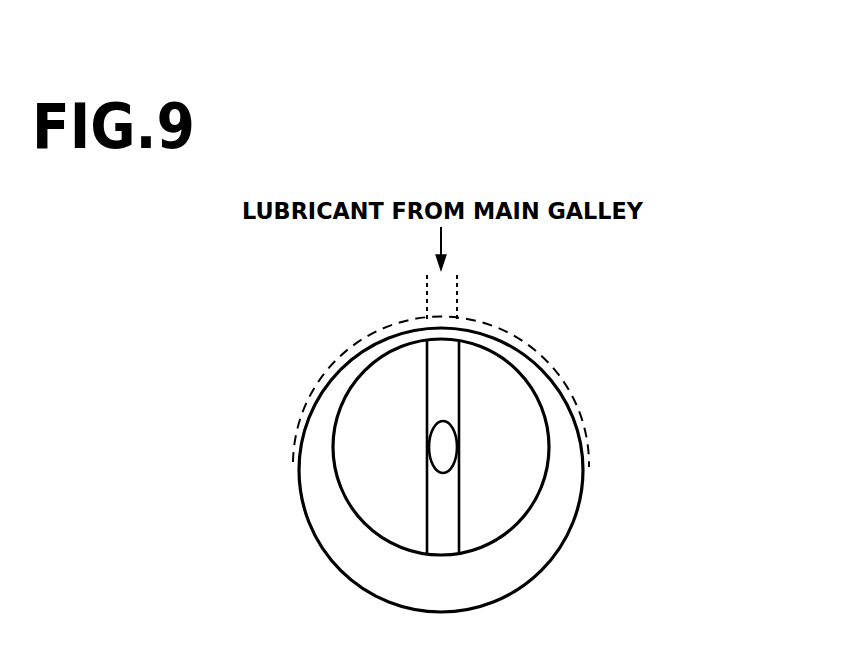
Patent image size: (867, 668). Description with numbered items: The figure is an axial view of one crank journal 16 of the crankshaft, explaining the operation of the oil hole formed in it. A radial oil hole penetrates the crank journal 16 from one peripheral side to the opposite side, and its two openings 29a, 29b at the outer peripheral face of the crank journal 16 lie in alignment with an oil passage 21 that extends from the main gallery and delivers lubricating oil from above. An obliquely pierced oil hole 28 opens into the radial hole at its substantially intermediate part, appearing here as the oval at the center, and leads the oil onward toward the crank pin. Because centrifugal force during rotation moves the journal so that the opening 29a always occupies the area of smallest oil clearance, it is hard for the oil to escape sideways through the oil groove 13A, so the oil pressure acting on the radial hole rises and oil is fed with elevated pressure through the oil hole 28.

The oil groove 13A is at (573, 404).
The crank journal 16 is at (515, 503).
The oil passage 21 is at (458, 321).
The oil hole 28 is at (455, 455).
The opening of oil hole 29a is at (448, 351).
The opening of oil hole 29b is at (445, 540).